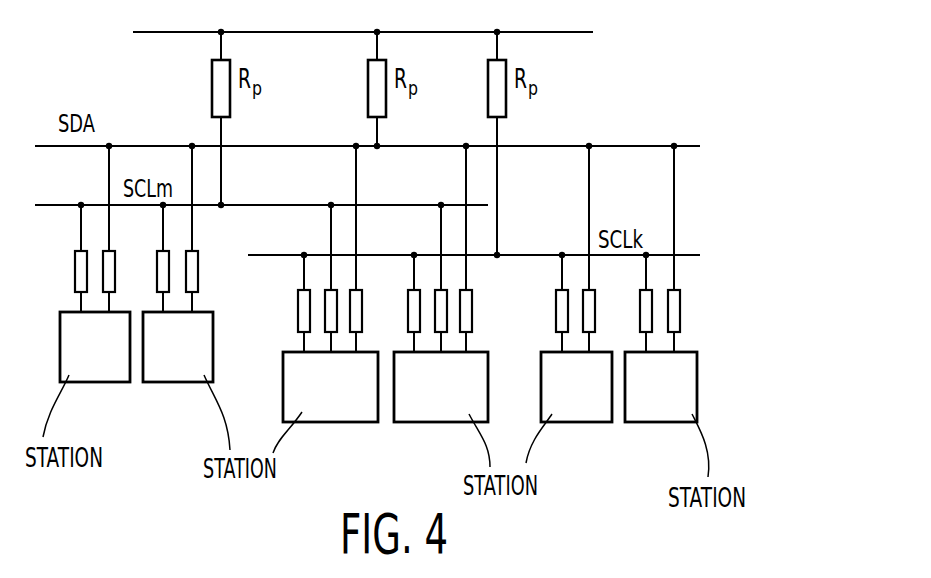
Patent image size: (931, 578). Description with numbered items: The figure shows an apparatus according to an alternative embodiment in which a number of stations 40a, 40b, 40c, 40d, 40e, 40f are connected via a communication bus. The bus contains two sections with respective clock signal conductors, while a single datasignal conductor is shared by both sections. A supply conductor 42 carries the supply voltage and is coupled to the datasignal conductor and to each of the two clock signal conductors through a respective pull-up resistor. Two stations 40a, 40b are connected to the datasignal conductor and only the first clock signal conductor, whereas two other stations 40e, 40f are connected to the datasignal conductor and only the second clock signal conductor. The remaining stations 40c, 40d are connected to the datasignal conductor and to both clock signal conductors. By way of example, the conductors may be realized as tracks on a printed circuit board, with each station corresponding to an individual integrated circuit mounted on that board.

The supply conductor 42 is at (555, 32).
The station 40a is at (87, 375).
The station 40b is at (183, 375).
The station 40c is at (340, 412).
The station 40d is at (437, 412).
The station 40e is at (573, 414).
The station 40f is at (669, 414).